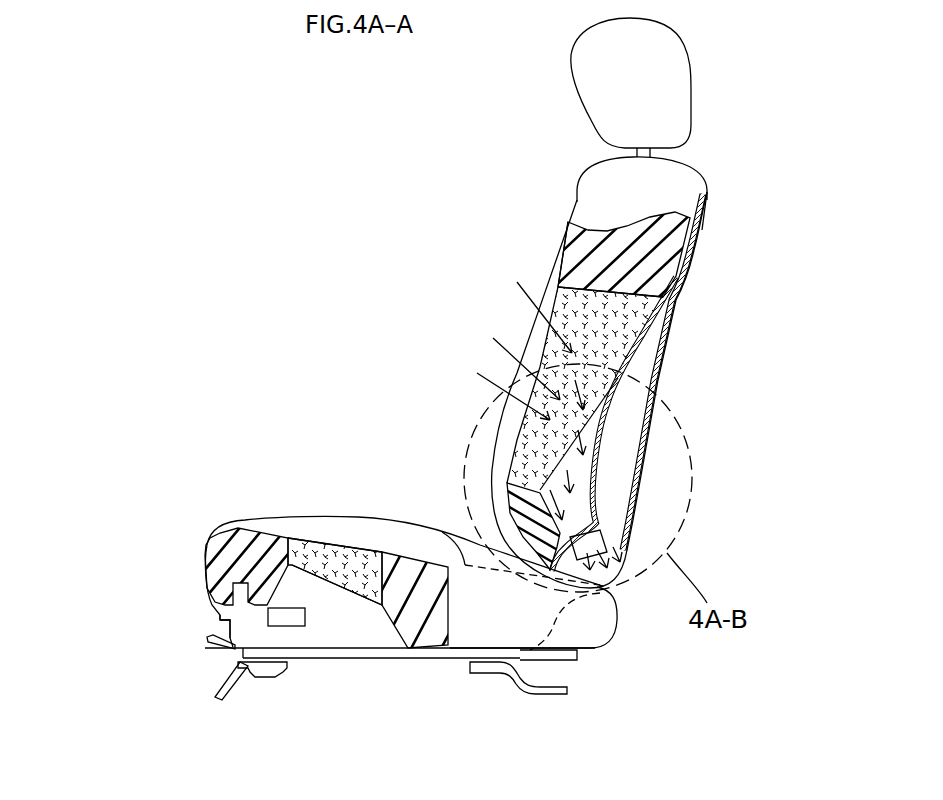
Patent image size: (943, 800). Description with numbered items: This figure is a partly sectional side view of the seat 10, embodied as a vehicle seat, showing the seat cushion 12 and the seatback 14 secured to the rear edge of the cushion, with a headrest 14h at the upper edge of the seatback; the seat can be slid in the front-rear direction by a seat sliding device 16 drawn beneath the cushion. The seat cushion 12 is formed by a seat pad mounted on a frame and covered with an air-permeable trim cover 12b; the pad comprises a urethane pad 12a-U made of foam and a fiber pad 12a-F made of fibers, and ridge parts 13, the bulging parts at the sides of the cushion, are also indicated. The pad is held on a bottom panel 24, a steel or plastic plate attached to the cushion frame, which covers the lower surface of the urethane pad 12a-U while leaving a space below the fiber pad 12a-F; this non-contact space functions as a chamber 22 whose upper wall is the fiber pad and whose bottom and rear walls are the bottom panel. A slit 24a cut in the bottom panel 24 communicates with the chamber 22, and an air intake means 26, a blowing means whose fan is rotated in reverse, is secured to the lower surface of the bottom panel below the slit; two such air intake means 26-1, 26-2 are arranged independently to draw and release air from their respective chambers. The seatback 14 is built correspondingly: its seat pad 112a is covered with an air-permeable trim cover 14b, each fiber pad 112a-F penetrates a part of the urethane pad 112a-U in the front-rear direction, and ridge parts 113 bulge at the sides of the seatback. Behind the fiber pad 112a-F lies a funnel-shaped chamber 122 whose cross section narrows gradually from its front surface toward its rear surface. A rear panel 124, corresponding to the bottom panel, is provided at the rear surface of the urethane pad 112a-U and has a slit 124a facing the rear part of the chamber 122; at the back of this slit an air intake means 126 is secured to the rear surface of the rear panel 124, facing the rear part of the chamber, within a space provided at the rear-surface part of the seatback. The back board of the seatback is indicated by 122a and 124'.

The seat 10 is at (295, 247).
The seat cushion 12 is at (362, 513).
The urethane pad 12a-U is at (238, 528).
The fiber pad 12a-F is at (375, 548).
The trim cover 12b is at (207, 573).
The ridge parts 13 is at (303, 585).
The chamber 22 is at (318, 542).
The bottom panel 24 is at (398, 628).
The slit 24a is at (297, 595).
The air intake means 26 is at (277, 620).
The air intake means 26-1 is at (226, 633).
The air intake means 26-2 is at (221, 642).
The seat sliding device 16 is at (436, 670).
The seatback 14 is at (690, 293).
The headrest 14h is at (680, 55).
The trim cover 14b is at (553, 293).
The seat pad 112a is at (570, 140).
The fiber pad 112a-F is at (540, 280).
The urethane pad 112a-U is at (570, 233).
The ridge parts 113 is at (472, 338).
The chamber 122 is at (596, 472).
The back board 122a is at (595, 438).
The rear panel 124 is at (716, 372).
The back board 124' is at (761, 225).
The slit 124a is at (590, 497).
The air intake means 126 is at (595, 533).